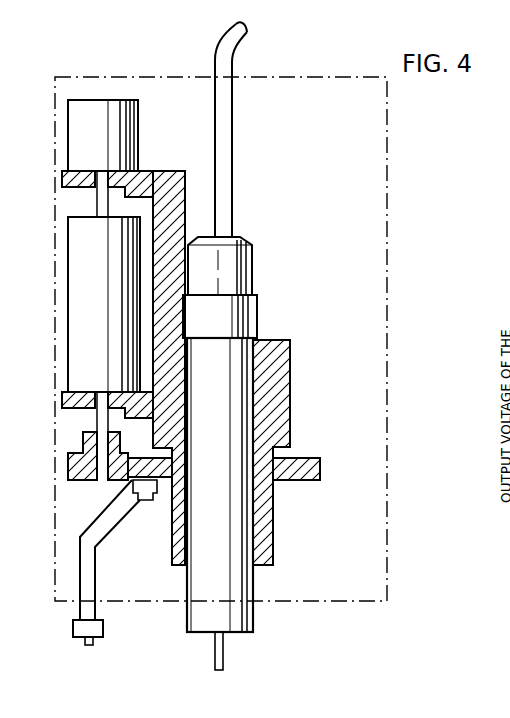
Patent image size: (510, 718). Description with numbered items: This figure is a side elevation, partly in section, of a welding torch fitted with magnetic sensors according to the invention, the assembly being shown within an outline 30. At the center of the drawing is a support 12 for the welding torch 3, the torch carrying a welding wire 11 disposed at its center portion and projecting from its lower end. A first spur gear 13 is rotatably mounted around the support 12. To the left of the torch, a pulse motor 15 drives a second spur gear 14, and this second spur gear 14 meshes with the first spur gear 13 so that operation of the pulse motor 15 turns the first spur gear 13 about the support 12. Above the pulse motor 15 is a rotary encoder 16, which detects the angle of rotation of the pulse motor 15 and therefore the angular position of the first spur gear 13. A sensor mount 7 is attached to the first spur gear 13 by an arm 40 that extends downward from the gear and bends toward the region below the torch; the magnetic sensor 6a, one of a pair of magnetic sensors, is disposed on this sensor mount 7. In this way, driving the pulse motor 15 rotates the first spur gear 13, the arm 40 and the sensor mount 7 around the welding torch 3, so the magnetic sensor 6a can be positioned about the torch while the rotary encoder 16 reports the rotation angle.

The housing / enclosure 30 is at (290, 56).
The rotary encoder 16 is at (78, 135).
The pulse motor 15 is at (78, 252).
The second spur gear 14 is at (70, 465).
The first spur gear 13 is at (155, 457).
The support 12 is at (290, 425).
The arm 40 is at (96, 582).
The sensor mount 7 is at (80, 626).
The magnetic sensor 6a is at (93, 641).
The welding torch 3 is at (245, 618).
The welding wire 11 is at (225, 650).